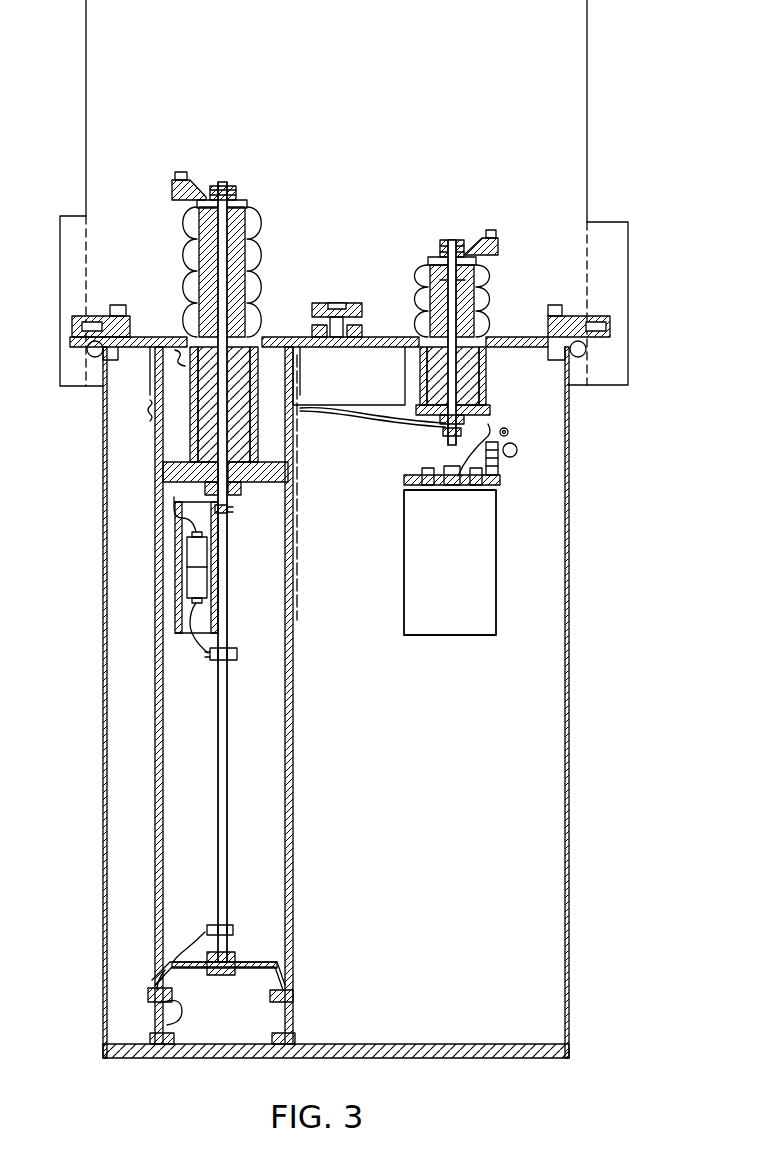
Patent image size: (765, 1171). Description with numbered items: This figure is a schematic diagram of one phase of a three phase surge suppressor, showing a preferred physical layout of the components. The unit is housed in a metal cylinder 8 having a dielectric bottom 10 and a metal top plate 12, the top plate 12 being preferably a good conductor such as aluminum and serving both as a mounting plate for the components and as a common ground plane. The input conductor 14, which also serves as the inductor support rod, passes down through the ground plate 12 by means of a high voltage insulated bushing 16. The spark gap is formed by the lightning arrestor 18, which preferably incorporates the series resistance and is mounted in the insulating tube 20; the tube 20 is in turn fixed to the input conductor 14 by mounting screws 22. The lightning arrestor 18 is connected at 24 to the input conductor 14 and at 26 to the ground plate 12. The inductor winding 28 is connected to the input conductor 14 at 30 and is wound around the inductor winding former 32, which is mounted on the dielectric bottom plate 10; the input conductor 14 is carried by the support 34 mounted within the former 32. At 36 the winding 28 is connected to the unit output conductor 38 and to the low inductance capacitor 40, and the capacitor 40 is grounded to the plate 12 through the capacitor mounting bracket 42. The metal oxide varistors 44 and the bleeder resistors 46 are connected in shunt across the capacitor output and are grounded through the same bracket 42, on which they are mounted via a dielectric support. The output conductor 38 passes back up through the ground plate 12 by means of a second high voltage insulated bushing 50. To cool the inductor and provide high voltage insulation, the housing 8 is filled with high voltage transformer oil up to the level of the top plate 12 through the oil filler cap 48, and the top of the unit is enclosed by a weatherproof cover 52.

The metal cylinder 8 is at (570, 851).
The dielectric bottom 10 is at (441, 1052).
The metal top plate 12 is at (542, 347).
The input conductor 14 is at (225, 228).
The high voltage insulated bushing 16 is at (194, 267).
The lightning arrestor 18 is at (196, 592).
The insulating tube 20 is at (178, 582).
The mounting screws 22 is at (214, 509).
The connection to input conductor 24 is at (209, 656).
The connection to ground plate 26 is at (183, 360).
The inductor winding 28 is at (152, 978).
The connection of winding to input conductor 30 is at (206, 930).
The inductor winding former 32 is at (157, 778).
The support 34 is at (163, 1006).
The connection of winding to output conductor 36 is at (465, 424).
The output conductor 38 is at (458, 292).
The low inductance capacitor 40 is at (480, 551).
The capacitor mounting bracket 42 is at (503, 480).
The metal oxide varistors 44 is at (517, 452).
The bleeder resistors 46 is at (508, 432).
The oil filler cap 48 is at (340, 304).
The high voltage insulated bushing 50 is at (477, 297).
The weatherproof cover 52 is at (588, 86).